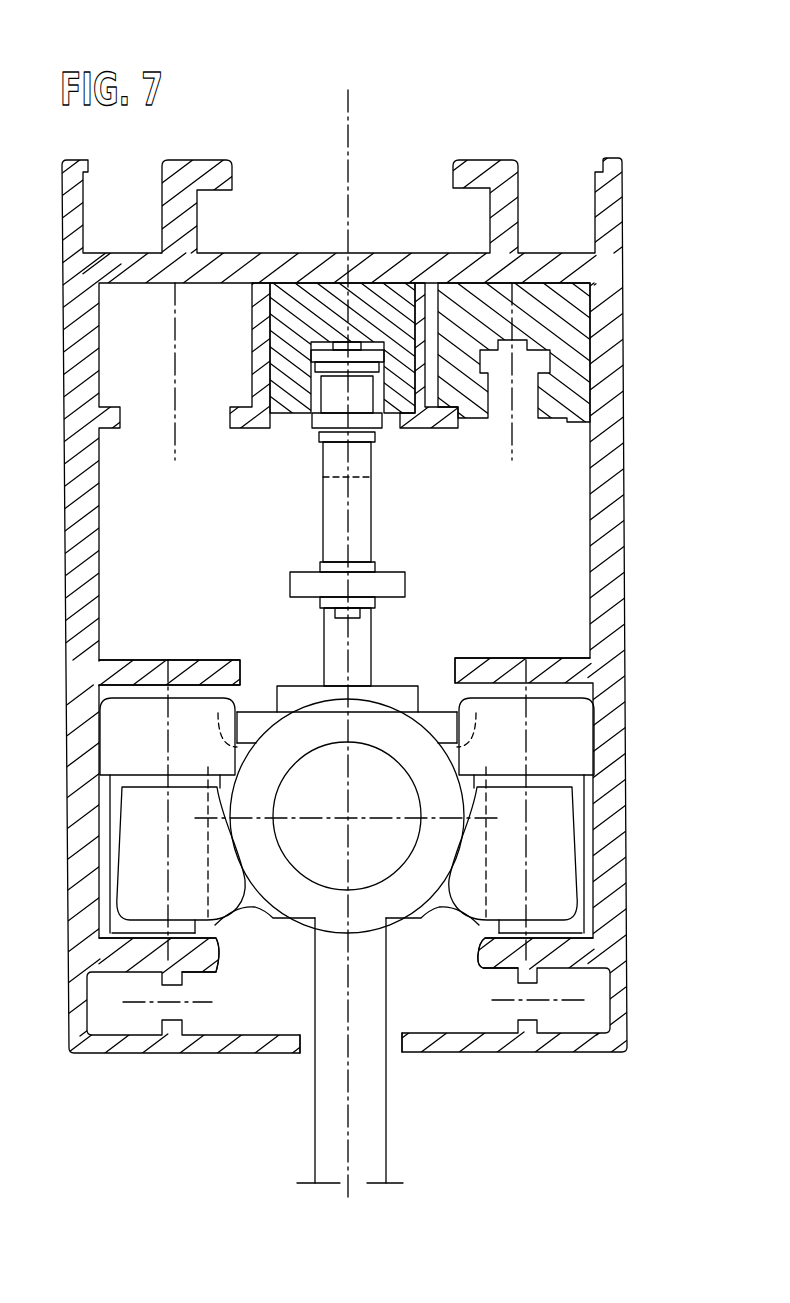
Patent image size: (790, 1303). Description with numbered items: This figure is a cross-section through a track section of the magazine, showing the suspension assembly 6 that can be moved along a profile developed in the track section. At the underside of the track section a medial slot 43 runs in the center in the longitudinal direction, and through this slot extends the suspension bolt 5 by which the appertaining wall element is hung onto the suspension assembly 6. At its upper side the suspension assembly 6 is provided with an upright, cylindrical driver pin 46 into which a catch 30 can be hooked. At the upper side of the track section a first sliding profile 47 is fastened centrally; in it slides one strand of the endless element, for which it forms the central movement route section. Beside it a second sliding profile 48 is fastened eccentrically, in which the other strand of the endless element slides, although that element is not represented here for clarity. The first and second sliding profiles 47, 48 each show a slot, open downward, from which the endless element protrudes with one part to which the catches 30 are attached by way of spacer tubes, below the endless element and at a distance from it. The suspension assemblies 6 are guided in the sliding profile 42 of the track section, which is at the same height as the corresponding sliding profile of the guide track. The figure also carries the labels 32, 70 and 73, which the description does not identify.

The suspension bolt 5 is at (363, 1100).
The suspension assembly 6 is at (382, 727).
The catch 30 is at (312, 583).
The guide flange 32 is at (178, 668).
The sliding profile 42 is at (505, 673).
The medial slot 43 is at (308, 1045).
The driver pin 46 is at (355, 635).
The first sliding profile 47 is at (372, 305).
The second sliding profile 48 is at (556, 333).
The housing 70 is at (642, 425).
The nut 73 is at (330, 397).